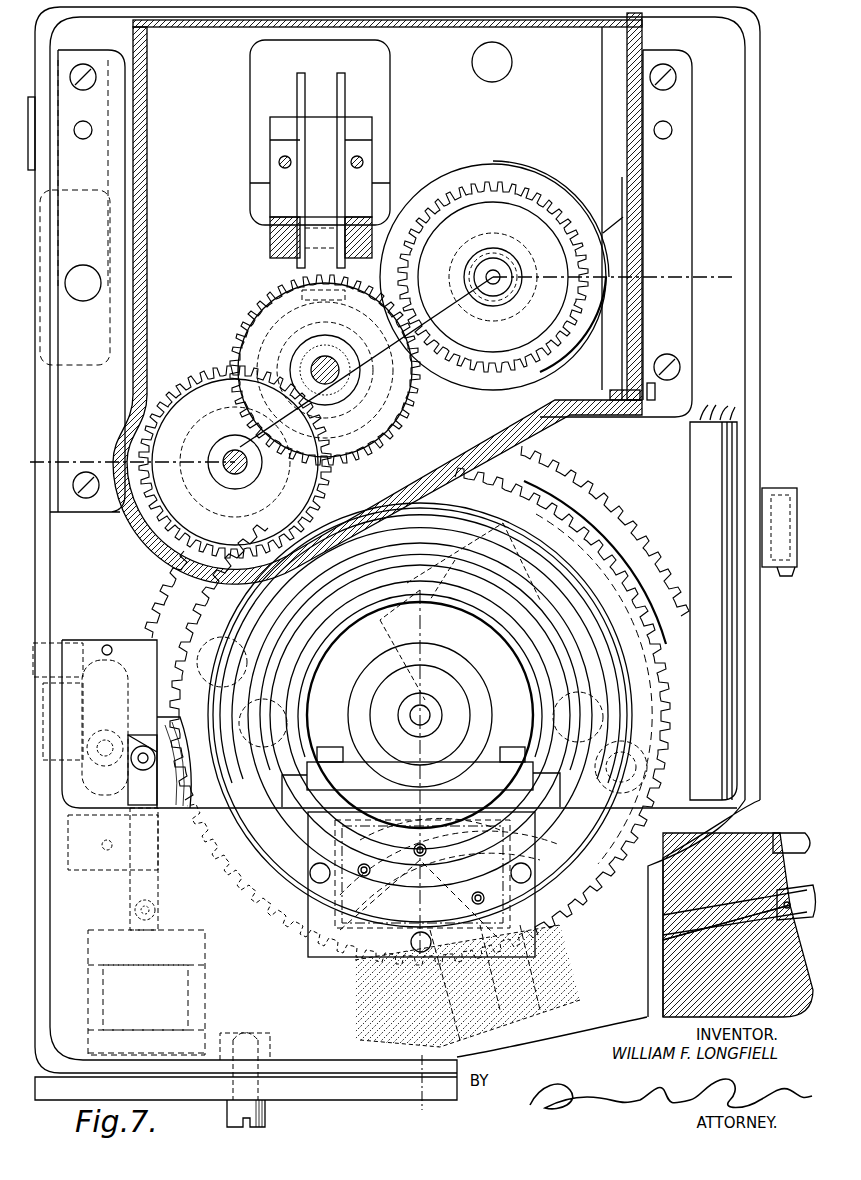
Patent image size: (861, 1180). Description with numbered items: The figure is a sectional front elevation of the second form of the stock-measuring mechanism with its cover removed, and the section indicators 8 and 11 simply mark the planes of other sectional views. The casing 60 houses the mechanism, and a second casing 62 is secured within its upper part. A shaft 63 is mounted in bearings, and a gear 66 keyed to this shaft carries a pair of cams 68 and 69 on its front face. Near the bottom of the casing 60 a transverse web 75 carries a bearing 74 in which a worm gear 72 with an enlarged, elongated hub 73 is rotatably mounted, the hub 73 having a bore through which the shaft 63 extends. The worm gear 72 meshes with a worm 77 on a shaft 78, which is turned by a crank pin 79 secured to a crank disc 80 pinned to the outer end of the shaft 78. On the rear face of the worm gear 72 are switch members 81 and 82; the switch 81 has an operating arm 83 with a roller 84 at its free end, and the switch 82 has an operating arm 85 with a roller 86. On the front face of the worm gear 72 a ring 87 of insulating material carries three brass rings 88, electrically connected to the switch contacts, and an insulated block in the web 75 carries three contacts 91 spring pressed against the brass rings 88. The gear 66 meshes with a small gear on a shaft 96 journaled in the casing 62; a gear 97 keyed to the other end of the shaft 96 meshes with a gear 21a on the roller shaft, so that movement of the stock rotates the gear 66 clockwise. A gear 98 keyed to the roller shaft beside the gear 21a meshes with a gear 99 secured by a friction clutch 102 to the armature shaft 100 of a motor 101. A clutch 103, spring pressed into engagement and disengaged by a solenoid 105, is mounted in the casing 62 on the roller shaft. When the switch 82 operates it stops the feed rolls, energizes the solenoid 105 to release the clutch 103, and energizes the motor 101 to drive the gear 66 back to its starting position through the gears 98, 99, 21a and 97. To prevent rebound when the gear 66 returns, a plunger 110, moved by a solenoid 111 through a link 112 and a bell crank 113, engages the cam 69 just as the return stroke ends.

The section line 8- 8 is at (430, 1110).
The section line 11- 11 is at (727, 279).
The gear 21a is at (355, 378).
The casing 60 is at (752, 360).
The second casing 62 is at (644, 176).
The shaft 63 is at (433, 717).
The gear 66 is at (574, 470).
The cam 68 is at (578, 517).
The cam 69 is at (228, 905).
The worm gear 72 is at (678, 528).
The elongated hub 73 is at (420, 715).
The bearing 74 is at (392, 650).
The transverse web 75 is at (417, 900).
The worm 77 is at (620, 925).
The shaft 78 is at (680, 927).
The crank pin 79 is at (788, 843).
The crank disc 80 is at (738, 956).
The switch member 81 is at (320, 690).
The switch member 82 is at (658, 660).
The operating arm 83 is at (262, 665).
The roller 84 is at (197, 627).
The operating arm 85 is at (640, 722).
The roller 86 is at (655, 792).
The insulating ring 87 is at (507, 643).
The brass rings 88 is at (462, 537).
The contacts 91 is at (363, 865).
The shaft 96 is at (247, 470).
The gear 97 is at (320, 507).
The gear 98 is at (327, 388).
The gear 99 is at (462, 183).
The armature shaft 100 is at (485, 277).
The motor 101 is at (533, 174).
The friction clutch 102 is at (488, 240).
The clutch 103 is at (234, 345).
The solenoid 105 is at (260, 137).
The plunger 110 is at (166, 700).
The solenoid 111 is at (188, 1012).
The link 112 is at (125, 880).
The bell crank 113 is at (124, 770).